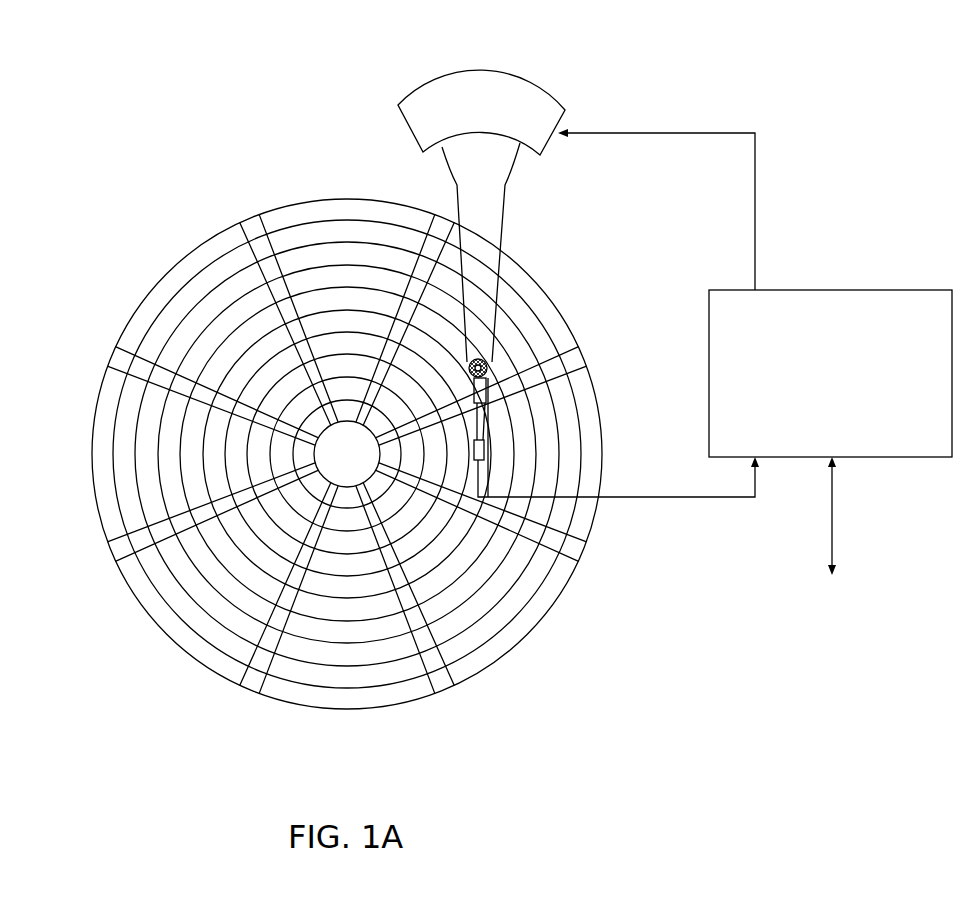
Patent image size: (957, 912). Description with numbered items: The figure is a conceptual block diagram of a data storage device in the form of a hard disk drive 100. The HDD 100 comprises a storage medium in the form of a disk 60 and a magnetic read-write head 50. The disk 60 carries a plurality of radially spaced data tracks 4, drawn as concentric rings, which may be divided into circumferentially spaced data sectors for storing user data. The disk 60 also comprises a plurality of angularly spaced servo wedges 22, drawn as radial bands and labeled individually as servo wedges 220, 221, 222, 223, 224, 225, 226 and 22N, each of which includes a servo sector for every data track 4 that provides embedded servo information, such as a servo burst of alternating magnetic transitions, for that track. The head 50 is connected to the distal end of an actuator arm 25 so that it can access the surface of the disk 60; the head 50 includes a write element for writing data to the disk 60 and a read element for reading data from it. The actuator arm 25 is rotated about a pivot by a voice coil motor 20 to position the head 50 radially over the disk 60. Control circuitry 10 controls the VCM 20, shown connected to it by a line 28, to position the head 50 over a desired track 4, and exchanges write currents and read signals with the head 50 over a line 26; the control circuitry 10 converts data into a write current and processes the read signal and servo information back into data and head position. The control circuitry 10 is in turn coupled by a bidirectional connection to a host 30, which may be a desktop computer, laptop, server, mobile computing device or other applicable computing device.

The hard disk drive 100 is at (160, 92).
The data track 4 is at (338, 230).
The disk 60 is at (155, 270).
The servo wedges 22 is at (348, 450).
The servo wedge 220 is at (247, 221).
The servo wedge 221 is at (112, 362).
The servo wedge 222 is at (115, 550).
The servo wedge 223 is at (254, 690).
The servo wedge 224 is at (446, 688).
The servo wedge 225 is at (582, 550).
The servo wedge 226 is at (578, 355).
The servo wedge 22N is at (445, 222).
The voice coil motor 20 is at (542, 152).
The actuator arm 25 is at (503, 220).
The magnetic read-write head 50 is at (495, 450).
The read/write signal line 26 is at (678, 500).
The VCM control signal line 28 is at (756, 208).
The control circuitry 10 is at (828, 290).
The host 30 is at (866, 601).